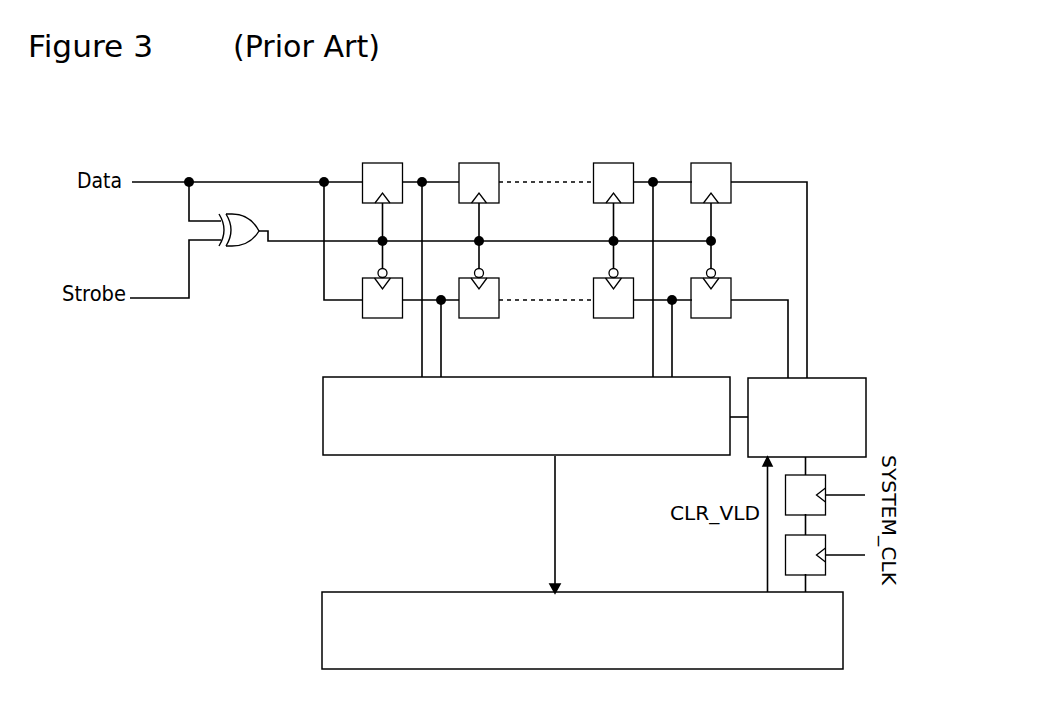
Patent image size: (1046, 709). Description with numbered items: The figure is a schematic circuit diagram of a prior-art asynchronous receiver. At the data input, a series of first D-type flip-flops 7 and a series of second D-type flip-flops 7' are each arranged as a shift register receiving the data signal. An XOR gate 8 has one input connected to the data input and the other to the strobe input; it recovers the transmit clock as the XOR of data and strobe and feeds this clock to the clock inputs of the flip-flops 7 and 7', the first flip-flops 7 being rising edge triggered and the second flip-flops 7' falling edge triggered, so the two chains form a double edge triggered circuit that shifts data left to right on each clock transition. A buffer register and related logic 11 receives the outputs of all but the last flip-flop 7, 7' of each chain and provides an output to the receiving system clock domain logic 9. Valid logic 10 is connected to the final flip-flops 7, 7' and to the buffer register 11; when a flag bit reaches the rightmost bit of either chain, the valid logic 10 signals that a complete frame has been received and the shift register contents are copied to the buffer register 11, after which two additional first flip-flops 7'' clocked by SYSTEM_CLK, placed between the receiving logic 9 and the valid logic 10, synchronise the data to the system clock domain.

The first D-type flip-flops 7 is at (547, 165).
The second D-type flip-flops 7' is at (527, 308).
The additional first flip-flops 7'' is at (822, 525).
The XOR gate 8 is at (240, 246).
The receiving system clock domain logic 9 is at (321, 620).
The valid logic 10 is at (818, 377).
The buffer register and related logic 11 is at (407, 456).